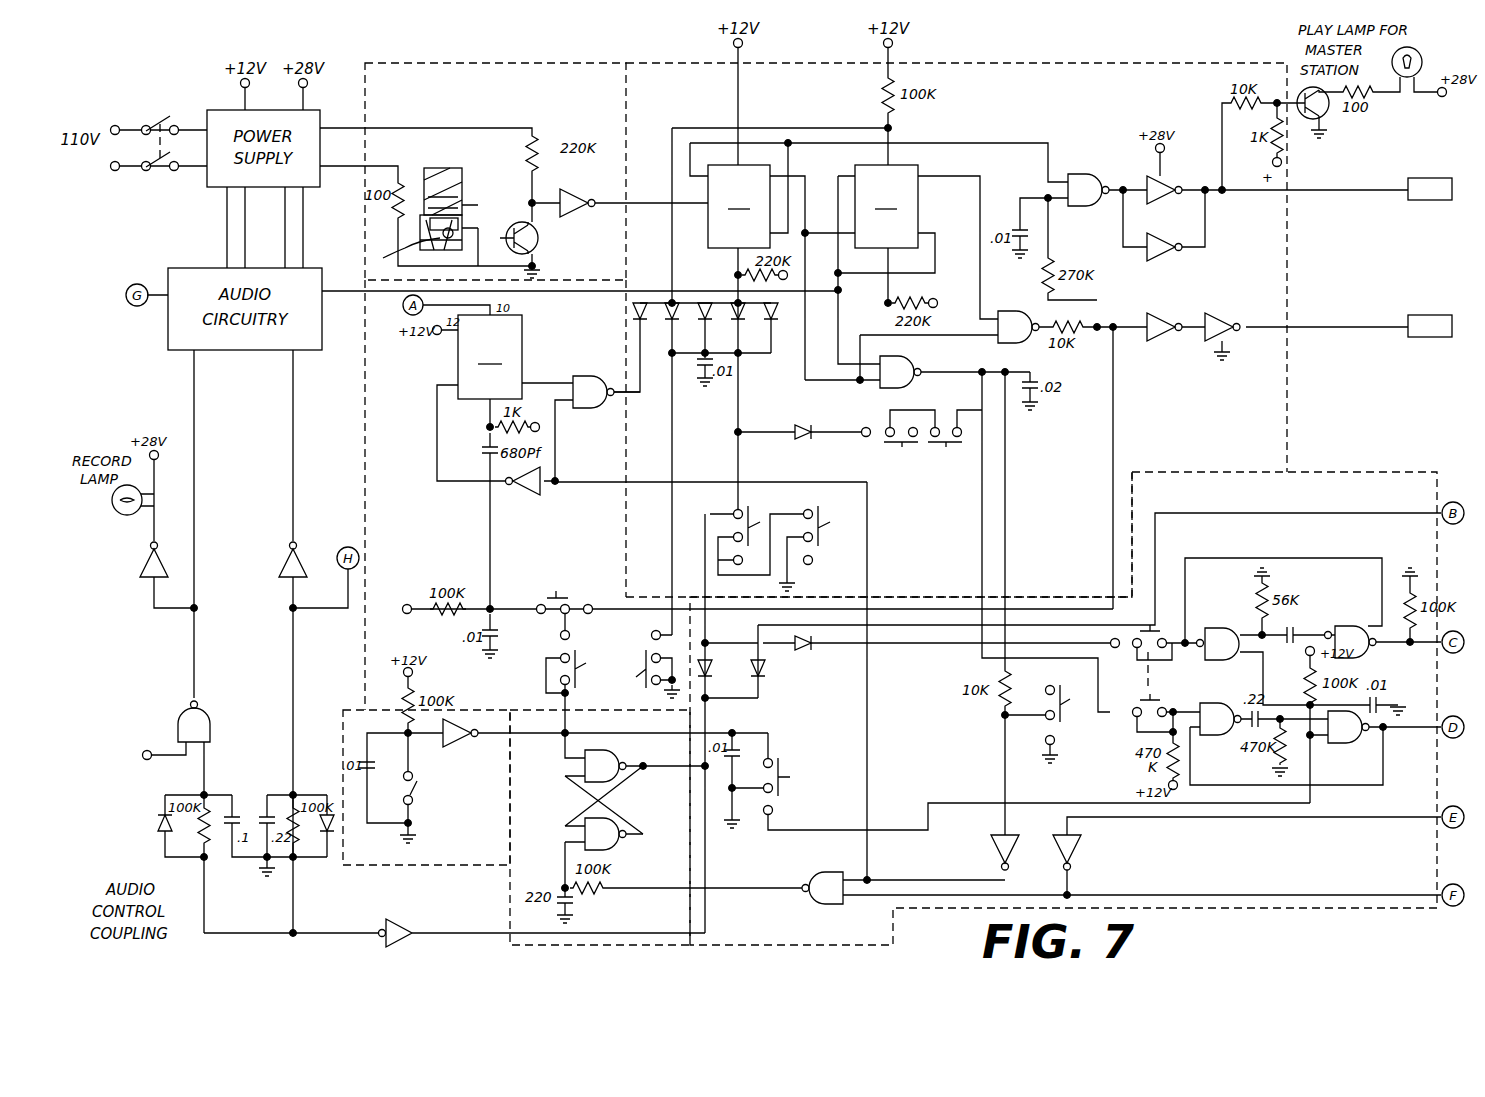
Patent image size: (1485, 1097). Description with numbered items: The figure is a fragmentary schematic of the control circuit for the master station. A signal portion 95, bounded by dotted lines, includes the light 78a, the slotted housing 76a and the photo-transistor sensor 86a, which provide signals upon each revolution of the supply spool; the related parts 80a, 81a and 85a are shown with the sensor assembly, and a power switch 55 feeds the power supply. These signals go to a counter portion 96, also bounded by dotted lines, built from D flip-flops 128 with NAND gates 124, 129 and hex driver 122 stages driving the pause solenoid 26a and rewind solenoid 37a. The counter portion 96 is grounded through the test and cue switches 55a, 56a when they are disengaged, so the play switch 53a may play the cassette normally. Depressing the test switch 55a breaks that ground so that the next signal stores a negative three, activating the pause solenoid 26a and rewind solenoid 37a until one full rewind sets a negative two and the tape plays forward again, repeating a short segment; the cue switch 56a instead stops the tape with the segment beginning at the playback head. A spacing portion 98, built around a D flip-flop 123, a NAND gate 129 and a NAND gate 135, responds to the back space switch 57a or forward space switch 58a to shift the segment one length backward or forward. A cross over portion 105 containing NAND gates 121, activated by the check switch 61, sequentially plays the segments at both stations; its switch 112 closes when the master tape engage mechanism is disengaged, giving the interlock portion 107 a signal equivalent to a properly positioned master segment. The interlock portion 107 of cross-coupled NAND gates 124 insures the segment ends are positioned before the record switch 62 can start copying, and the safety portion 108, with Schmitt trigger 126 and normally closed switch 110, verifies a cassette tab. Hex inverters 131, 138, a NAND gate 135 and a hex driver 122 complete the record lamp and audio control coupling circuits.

The pause solenoid 26a is at (1430, 178).
The rewind solenoid 37a is at (1430, 315).
The play switch 53a is at (550, 597).
The power switch 55 is at (157, 150).
The test switch 55a is at (757, 528).
The cue switch 56a is at (820, 525).
The back space switch 57a is at (580, 658).
The forward space switch 58a is at (652, 706).
The check switch 61 is at (1150, 683).
The record switch 62 is at (780, 764).
The slotted housing 76a is at (458, 214).
The light 78a is at (452, 228).
The lead 80a is at (403, 255).
The sensor 81a is at (440, 168).
The sensor part 85a is at (460, 190).
The sensor 86a is at (540, 242).
The signal portion 95 is at (478, 104).
The counter portion 96 is at (1090, 102).
The spacing portion 98 is at (406, 520).
The cross over portion 105 is at (1368, 501).
The interlock portion 107 is at (553, 822).
The safety portion 108 is at (456, 854).
The normally closed switch 110 is at (418, 794).
The switch 112 is at (1062, 733).
The Nand gate 121 is at (1348, 620).
The hex driver 122 is at (142, 562).
The D-flip flop 123 is at (488, 365).
The Nand gate 124 is at (632, 775).
The hex Schmidt trigger 126 is at (572, 192).
The D-flip flop 128 is at (812, 210).
The Nand gate 129 is at (586, 378).
The hex inverter 131 is at (1168, 340).
The Nand gate 135 is at (522, 497).
The hex inverter 138 is at (282, 553).